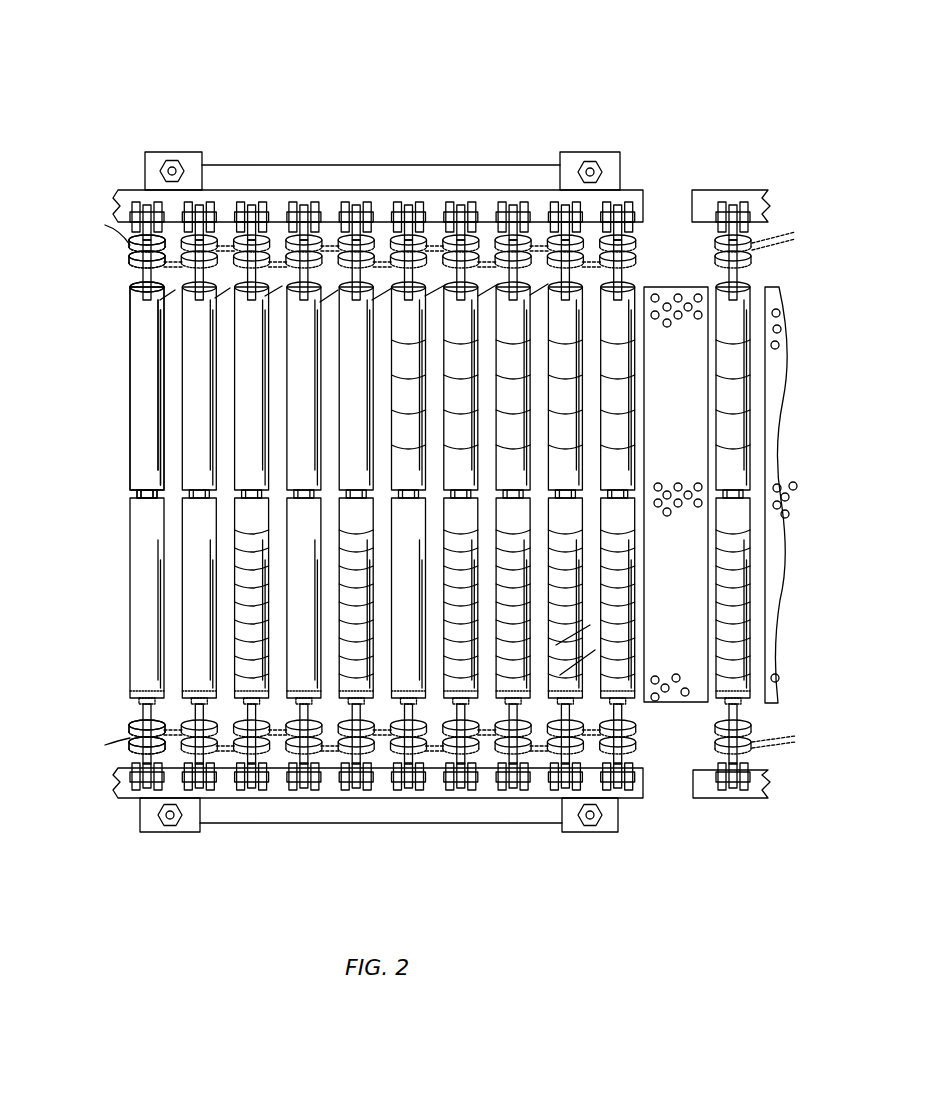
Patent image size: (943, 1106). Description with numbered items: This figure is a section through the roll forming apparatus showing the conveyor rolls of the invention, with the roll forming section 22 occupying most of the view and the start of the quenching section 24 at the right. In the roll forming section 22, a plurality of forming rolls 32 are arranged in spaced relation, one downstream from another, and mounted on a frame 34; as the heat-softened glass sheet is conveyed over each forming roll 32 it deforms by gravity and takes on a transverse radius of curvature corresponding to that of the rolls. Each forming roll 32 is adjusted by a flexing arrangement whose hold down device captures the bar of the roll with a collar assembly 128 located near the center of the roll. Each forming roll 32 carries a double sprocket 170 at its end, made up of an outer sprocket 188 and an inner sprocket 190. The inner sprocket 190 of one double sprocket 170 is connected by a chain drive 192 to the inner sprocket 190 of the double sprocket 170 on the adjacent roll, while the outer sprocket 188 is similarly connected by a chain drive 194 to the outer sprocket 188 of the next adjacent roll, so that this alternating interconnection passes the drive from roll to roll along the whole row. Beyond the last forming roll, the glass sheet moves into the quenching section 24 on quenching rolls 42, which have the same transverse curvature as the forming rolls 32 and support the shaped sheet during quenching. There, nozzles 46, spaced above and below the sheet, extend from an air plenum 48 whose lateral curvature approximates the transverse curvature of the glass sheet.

The roll forming section 22 is at (406, 41).
The quenching section 24 is at (749, 91).
The frame 34 is at (540, 165).
The forming roll 32 is at (128, 380).
The collar assembly 128 is at (130, 495).
The outer sprocket 188 is at (129, 240).
The inner sprocket 190 is at (129, 256).
The chain drive 192 is at (440, 285).
The chain drive 194 is at (545, 238).
The double sprocket 170 is at (612, 248).
The nozzles 46 is at (656, 296).
The air plenum 48 is at (690, 290).
The quenching roll 42 is at (752, 296).